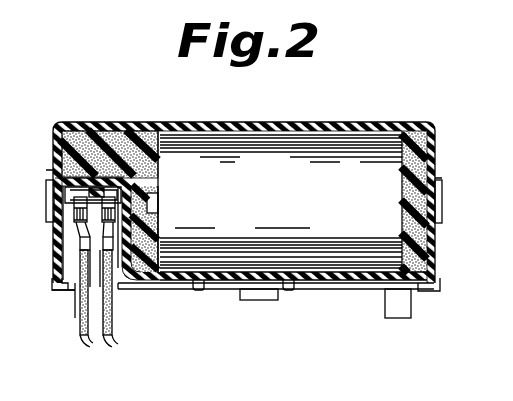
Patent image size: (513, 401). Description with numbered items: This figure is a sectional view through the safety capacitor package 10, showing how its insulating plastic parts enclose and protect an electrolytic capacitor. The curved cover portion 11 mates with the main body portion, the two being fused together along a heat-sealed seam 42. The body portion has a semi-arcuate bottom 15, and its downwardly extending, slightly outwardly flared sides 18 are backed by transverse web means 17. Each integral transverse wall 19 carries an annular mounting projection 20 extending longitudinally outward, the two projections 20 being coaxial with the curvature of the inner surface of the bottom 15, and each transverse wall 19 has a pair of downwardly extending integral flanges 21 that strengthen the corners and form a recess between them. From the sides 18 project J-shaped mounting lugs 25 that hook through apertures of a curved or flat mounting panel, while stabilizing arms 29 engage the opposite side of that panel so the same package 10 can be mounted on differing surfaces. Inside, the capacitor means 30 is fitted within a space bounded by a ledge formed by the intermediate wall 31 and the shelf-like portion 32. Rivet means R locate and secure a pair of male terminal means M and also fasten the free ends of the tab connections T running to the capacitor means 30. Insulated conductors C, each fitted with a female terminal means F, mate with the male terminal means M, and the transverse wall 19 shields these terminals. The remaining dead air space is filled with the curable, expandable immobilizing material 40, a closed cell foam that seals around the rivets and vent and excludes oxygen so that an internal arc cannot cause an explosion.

The safety capacitor package 10 is at (349, 122).
The cover portion 11 is at (376, 123).
The immobilizing material 40 is at (80, 129).
The shelf-like portion 32 is at (121, 172).
The rivet means R is at (93, 176).
The male terminal means M is at (54, 180).
The tab connections T is at (158, 183).
The female terminal means F is at (74, 200).
The insulated conductors C is at (113, 340).
The annular mounting projections 20 is at (46, 209).
The transverse walls 19 is at (55, 249).
The integral flanges 21 is at (54, 268).
The seam 42 is at (53, 173).
The capacitor means 30 is at (258, 160).
The intermediate wall 31 is at (160, 233).
The semi-arcuate bottom 15 is at (345, 281).
The sides 18 is at (169, 289).
The web means 17 is at (197, 290).
The stabilizing arms 29 is at (256, 300).
The mounting lugs 25 is at (75, 308).